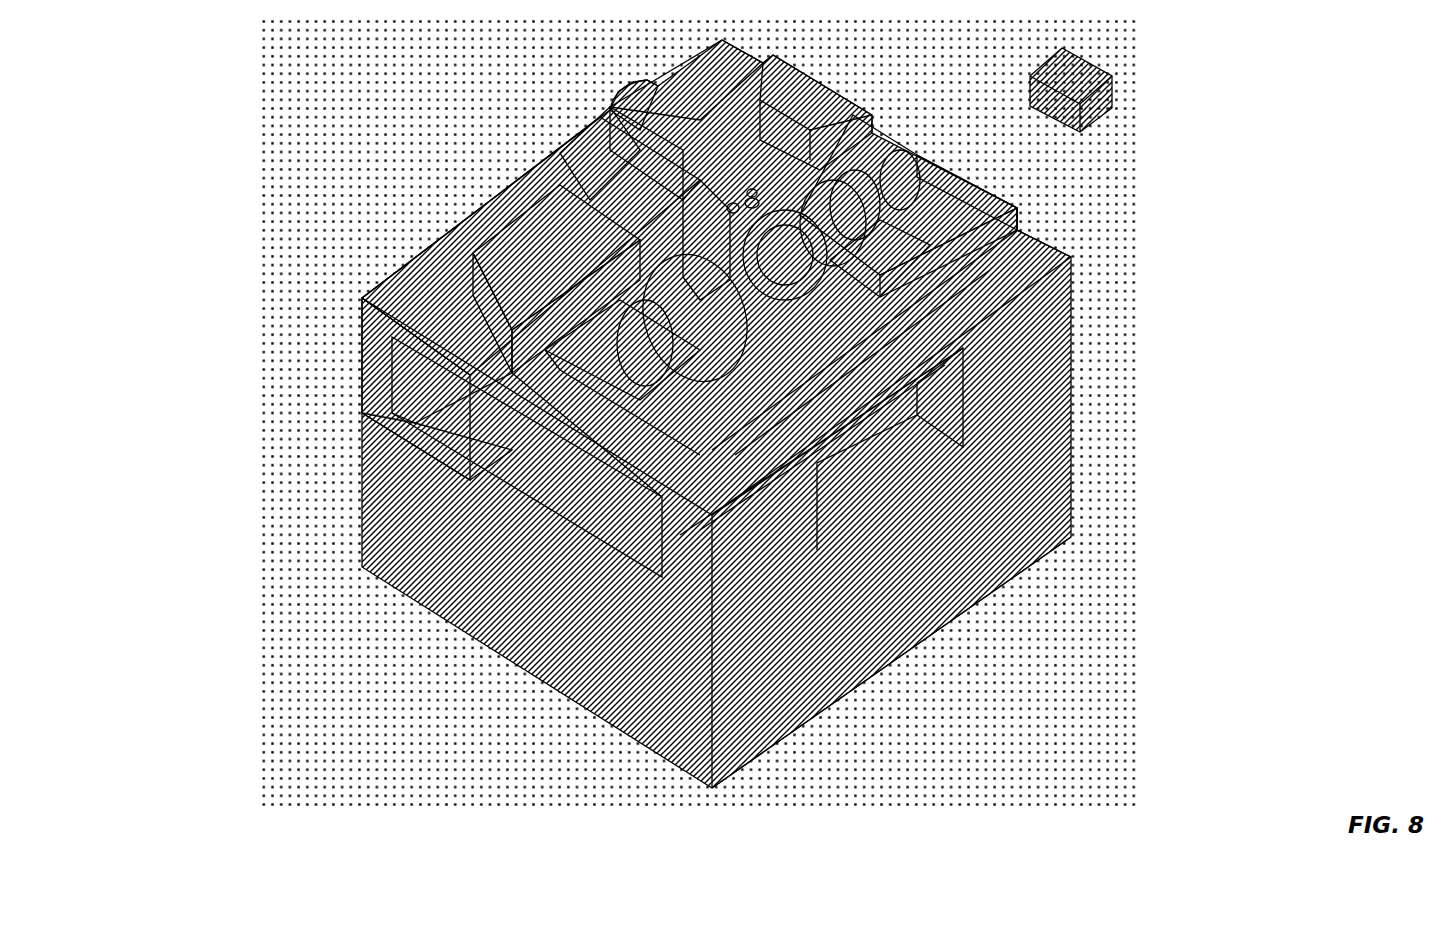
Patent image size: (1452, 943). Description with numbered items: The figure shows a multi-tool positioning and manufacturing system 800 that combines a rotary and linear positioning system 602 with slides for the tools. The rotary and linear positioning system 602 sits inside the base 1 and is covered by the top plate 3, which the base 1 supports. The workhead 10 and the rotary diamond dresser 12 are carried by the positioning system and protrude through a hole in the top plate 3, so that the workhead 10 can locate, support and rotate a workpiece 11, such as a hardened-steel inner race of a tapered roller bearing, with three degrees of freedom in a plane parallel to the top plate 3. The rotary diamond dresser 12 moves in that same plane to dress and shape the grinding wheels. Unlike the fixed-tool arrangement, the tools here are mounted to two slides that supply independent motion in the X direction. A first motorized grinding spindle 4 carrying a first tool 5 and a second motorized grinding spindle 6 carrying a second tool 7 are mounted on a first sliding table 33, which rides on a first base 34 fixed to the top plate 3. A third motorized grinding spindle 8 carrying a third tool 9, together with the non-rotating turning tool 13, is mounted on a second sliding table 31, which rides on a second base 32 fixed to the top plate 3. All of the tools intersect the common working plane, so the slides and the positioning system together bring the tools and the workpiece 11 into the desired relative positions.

The multi-tool positioning and manufacturing system 800 is at (280, 212).
The base 1 is at (362, 527).
The top plate 3 is at (458, 235).
The second sliding table 31 is at (565, 250).
The second base 32 is at (430, 300).
The non-rotating turning tool 13 is at (595, 135).
The third motorized grinding spindle 8 is at (615, 130).
The third tool 9 is at (686, 120).
The workhead 10 is at (683, 277).
The workpiece 11 is at (752, 205).
The rotary diamond dresser 12 is at (762, 190).
The second motorized grinding spindle 6 is at (947, 157).
The first base 34 is at (1000, 197).
The first sliding table 33 is at (948, 253).
The second tool 7 is at (864, 342).
The first tool 5 is at (821, 441).
The first motorized grinding spindle 4 is at (732, 302).
The rotary and linear positioning system 602 is at (1000, 583).